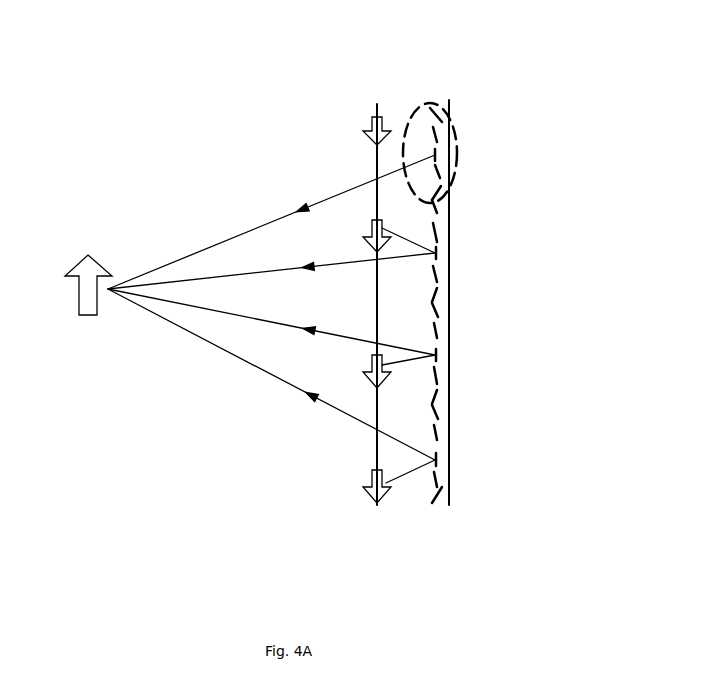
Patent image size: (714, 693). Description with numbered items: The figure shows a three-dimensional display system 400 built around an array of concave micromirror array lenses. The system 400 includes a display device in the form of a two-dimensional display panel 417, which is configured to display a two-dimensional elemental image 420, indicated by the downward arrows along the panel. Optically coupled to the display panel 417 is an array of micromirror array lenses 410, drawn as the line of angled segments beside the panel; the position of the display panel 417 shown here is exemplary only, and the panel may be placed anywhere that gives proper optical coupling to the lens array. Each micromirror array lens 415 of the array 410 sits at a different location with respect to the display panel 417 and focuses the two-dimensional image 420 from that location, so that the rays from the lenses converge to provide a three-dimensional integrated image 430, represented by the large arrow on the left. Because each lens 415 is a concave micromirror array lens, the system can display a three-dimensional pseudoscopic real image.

The three-dimensional display system 400 is at (525, 108).
The array of micromirror array lenses 410 is at (442, 510).
The micromirror array lens 415 is at (423, 102).
The two-dimensional display panel 417 is at (378, 452).
The two-dimensional image 420 is at (435, 155).
The three-dimensional image 430 is at (88, 272).